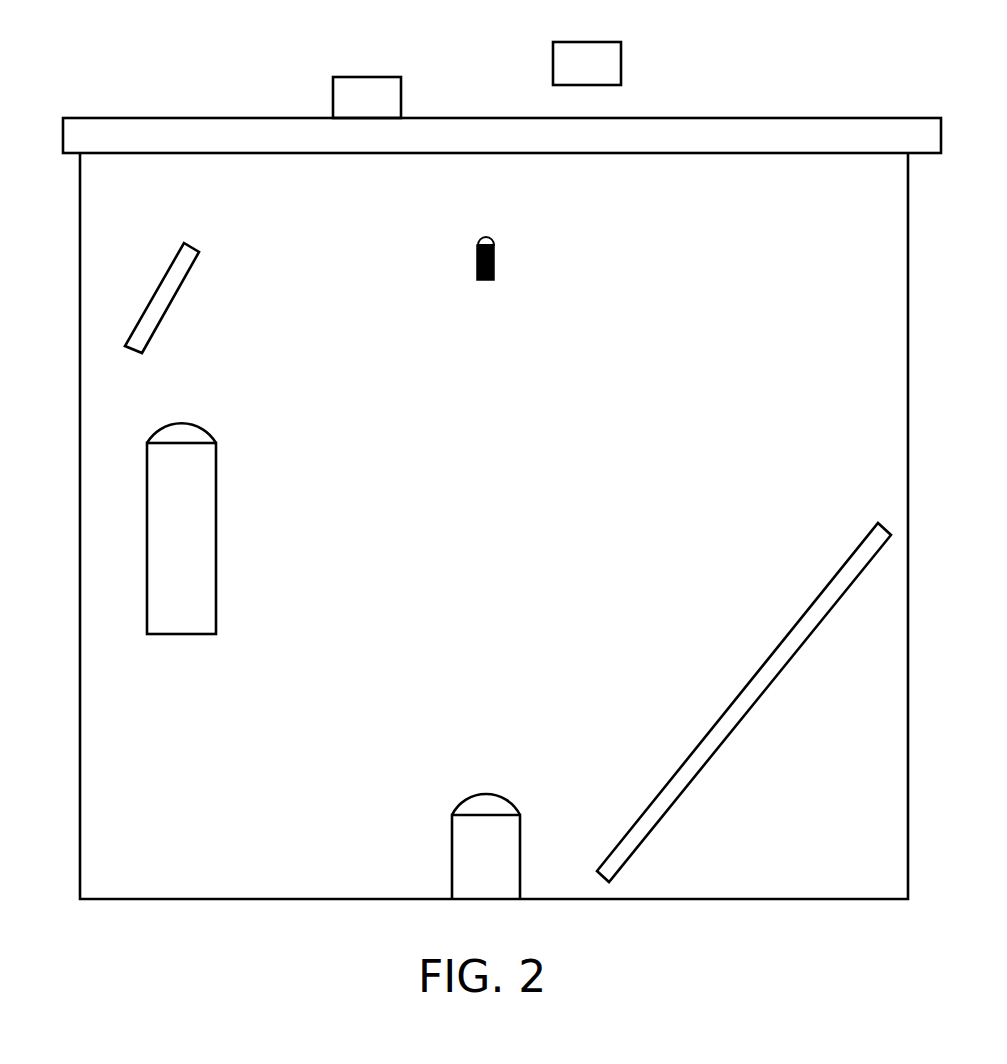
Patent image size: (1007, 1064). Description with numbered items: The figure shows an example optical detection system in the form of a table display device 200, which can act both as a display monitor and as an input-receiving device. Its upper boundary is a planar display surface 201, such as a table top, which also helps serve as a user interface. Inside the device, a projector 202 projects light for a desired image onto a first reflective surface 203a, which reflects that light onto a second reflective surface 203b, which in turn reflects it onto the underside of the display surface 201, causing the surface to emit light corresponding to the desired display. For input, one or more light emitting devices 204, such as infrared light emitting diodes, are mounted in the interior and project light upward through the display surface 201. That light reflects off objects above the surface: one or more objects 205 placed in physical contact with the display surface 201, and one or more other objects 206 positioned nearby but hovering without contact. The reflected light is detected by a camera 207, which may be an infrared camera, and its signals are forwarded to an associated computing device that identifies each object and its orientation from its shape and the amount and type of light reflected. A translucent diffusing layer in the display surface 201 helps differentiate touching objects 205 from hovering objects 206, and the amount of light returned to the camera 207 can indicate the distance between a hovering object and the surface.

The table display device 200 is at (763, 34).
The display surface 201 is at (148, 118).
The projector 202 is at (216, 531).
The first reflective surface 203a is at (170, 303).
The second reflective surface 203b is at (751, 709).
The light emitting device 204 is at (495, 242).
The object in physical contact 205 is at (367, 77).
The hovering object 206 is at (593, 42).
The camera 207 is at (452, 818).